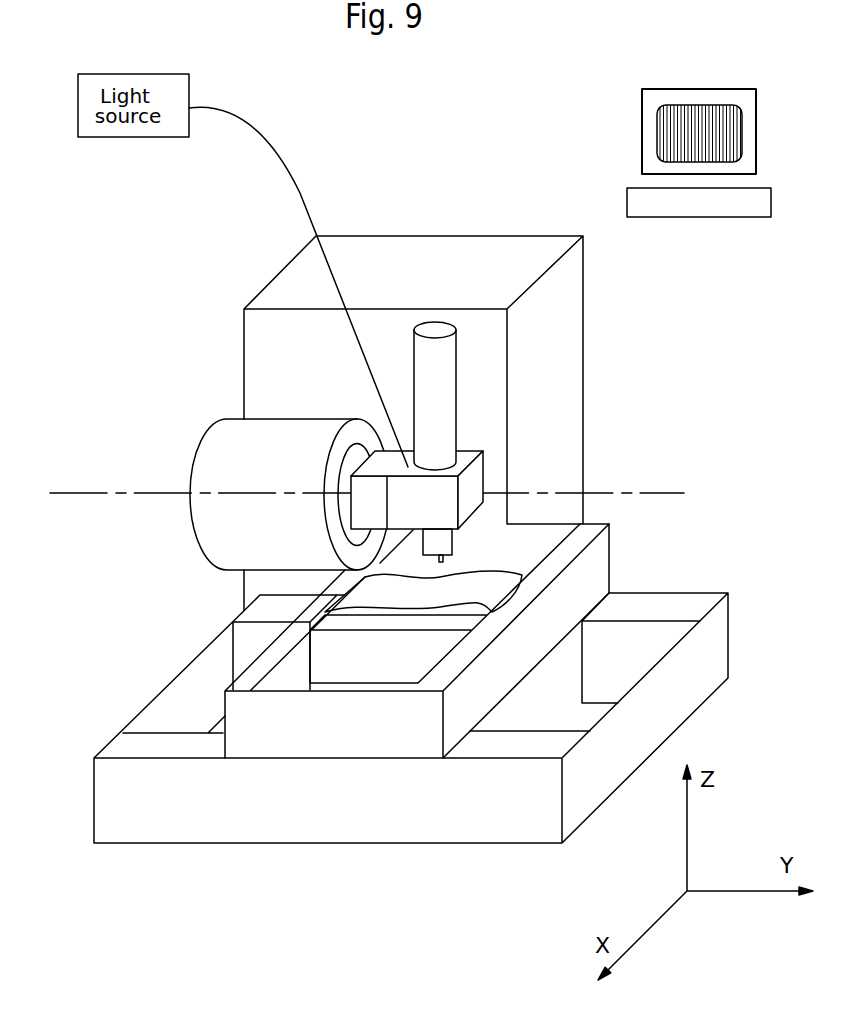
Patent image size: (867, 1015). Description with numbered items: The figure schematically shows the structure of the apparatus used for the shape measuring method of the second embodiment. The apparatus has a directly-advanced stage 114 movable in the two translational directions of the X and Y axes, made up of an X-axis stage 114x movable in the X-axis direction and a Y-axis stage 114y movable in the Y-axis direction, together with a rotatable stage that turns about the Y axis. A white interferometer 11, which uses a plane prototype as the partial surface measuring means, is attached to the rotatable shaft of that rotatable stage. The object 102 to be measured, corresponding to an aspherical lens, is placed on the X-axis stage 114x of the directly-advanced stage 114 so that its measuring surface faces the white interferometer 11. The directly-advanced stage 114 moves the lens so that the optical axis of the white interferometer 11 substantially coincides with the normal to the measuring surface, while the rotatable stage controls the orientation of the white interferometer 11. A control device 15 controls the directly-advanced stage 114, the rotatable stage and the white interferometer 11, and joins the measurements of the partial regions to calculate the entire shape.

The white interferometer 11 is at (465, 488).
The control device 15 is at (698, 217).
The object to be measured 102 is at (358, 597).
The directly-advanced stage 114 is at (77, 687).
The X-axis stage 114x is at (238, 688).
The Y-axis stage 114y is at (170, 745).